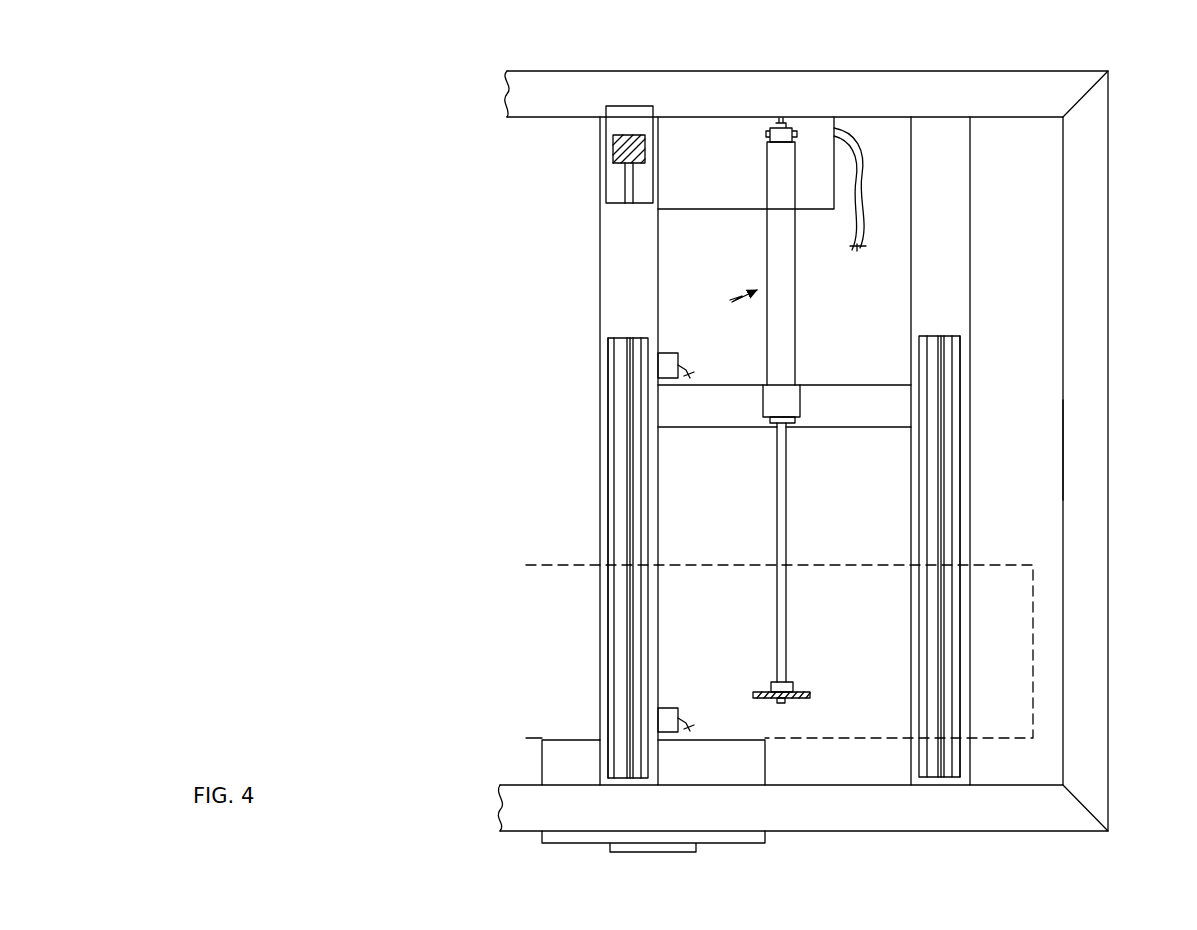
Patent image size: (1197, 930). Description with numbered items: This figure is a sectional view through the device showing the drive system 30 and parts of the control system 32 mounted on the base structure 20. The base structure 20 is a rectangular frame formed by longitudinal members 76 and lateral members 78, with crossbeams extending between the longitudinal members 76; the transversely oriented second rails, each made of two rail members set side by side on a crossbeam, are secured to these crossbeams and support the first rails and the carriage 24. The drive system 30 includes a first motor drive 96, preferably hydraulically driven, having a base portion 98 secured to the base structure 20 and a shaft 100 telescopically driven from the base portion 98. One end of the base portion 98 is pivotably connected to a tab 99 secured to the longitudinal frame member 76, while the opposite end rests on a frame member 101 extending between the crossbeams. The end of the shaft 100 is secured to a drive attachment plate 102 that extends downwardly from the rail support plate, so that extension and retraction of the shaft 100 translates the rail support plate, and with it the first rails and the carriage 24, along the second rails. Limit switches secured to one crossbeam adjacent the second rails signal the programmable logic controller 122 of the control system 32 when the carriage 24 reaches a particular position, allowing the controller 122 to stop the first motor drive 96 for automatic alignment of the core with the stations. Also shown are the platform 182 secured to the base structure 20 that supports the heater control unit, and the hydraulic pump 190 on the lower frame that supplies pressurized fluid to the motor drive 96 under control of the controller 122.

The base structure 20 is at (1090, 450).
The carriage 24 is at (563, 565).
The drive system 30 is at (730, 300).
The control system 32 is at (580, 768).
The longitudinal members 76 is at (938, 90).
The lateral members 78 is at (1090, 140).
The first motor drive 96 is at (785, 315).
The base portion 98 is at (773, 265).
The tab 99 is at (783, 125).
The shaft 100 is at (786, 515).
The frame member 101 is at (836, 415).
The drive attachment plate 102 is at (805, 672).
The programmable logic controller 122 is at (660, 848).
The platform 182 is at (617, 150).
The hydraulic pump 190 is at (718, 150).